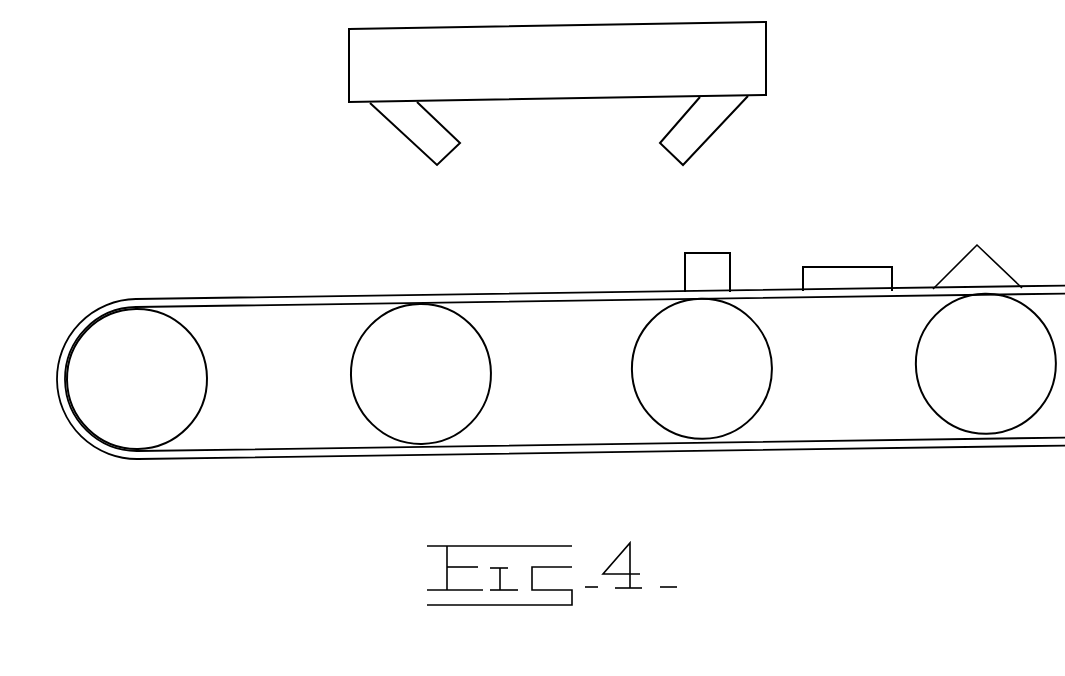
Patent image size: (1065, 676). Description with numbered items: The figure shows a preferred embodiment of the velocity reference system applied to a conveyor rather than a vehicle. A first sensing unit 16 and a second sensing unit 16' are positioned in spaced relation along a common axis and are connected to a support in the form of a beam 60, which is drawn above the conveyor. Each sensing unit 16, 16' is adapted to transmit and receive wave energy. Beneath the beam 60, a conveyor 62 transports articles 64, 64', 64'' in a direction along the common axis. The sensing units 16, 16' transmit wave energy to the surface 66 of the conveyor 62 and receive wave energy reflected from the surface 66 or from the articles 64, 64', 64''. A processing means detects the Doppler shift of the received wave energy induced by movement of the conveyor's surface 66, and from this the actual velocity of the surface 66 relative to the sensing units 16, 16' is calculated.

The beam 60 is at (560, 70).
The first sensing unit 16 is at (408, 133).
The second sensing unit 16' is at (715, 130).
The conveyor 62 is at (560, 372).
The surface 66 is at (322, 280).
The article 64 is at (729, 257).
The article 64' is at (847, 253).
The article 64'' is at (968, 253).